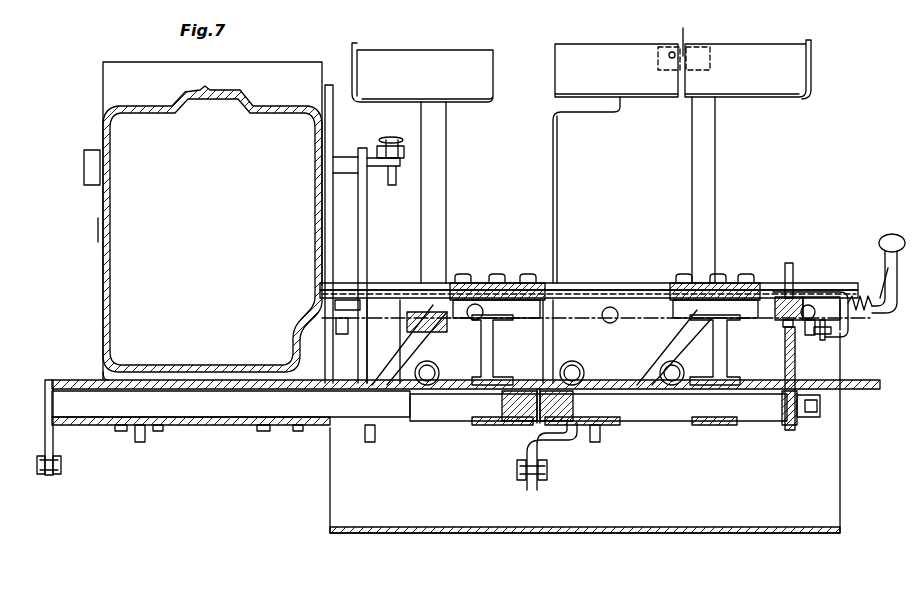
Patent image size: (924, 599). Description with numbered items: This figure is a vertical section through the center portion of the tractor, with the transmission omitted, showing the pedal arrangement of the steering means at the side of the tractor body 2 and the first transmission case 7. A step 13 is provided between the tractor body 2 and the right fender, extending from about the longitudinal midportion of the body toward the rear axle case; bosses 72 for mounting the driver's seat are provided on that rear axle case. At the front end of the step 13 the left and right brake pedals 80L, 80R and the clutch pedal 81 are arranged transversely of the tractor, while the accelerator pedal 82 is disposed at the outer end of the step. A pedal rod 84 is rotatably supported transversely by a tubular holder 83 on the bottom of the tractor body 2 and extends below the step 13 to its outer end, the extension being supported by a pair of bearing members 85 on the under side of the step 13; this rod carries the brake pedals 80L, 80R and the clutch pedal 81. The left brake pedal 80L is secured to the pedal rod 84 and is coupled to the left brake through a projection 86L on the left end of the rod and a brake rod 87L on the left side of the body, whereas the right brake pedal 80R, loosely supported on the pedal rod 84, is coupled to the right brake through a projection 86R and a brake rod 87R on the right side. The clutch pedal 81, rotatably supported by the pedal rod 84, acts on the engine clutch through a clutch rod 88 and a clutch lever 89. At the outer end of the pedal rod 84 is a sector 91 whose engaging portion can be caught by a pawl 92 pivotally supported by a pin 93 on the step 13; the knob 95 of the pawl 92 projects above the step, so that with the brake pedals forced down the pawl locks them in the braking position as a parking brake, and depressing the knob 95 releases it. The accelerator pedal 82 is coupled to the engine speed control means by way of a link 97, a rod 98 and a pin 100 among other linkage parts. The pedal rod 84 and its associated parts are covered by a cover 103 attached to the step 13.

The tractor body 2 is at (98, 284).
The first transmission case 7 is at (101, 338).
The step 13 is at (626, 284).
The bosses 72 is at (684, 40).
The left brake pedal 80L is at (607, 56).
The right brake pedal 80R is at (764, 56).
The clutch pedal 81 is at (414, 56).
The accelerator pedal 82 is at (886, 313).
The tubular holder 83 is at (208, 430).
The pedal rod 84 is at (350, 410).
The bearing members 85 is at (488, 356).
The left projection 86L is at (53, 440).
The right projection 86R is at (565, 443).
The left brake rod 87L is at (60, 474).
The right brake rod 87R is at (542, 480).
The clutch rod 88 is at (357, 332).
The clutch lever 89 is at (367, 212).
The sector 91 is at (795, 377).
The pawl 92 is at (788, 333).
The pin 93 is at (780, 298).
The knob 95 is at (791, 274).
The link 97 is at (826, 338).
The rod 98 is at (807, 336).
The pin 100 is at (588, 290).
The cover 103 is at (626, 534).